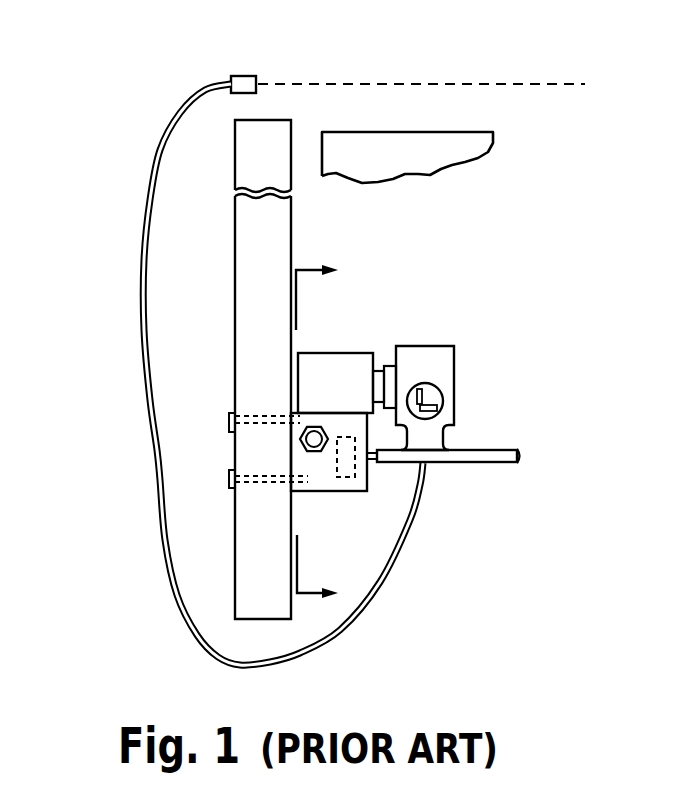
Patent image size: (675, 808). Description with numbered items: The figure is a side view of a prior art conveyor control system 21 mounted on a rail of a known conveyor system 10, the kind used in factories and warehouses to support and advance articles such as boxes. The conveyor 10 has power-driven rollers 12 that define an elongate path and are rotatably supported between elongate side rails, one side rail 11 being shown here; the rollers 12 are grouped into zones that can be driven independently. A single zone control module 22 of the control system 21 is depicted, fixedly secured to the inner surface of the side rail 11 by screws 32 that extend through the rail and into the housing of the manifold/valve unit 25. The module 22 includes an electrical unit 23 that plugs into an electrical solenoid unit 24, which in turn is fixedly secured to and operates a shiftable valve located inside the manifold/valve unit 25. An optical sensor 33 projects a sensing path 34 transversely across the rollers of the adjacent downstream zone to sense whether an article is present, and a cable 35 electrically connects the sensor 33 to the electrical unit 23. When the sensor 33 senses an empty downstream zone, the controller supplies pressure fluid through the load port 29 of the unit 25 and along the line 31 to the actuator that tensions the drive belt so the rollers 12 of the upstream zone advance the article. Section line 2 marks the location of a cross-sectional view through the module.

The section line 2- 2 is at (317, 434).
The conveyor system 10 is at (508, 121).
The side rail 11 is at (272, 241).
The rollers 12 is at (410, 133).
The conveyor control system 21 is at (456, 313).
The zone control module 22 is at (463, 342).
The electrical unit 23 is at (408, 355).
The electrical solenoid unit 24 is at (343, 353).
The manifold/valve unit 25 is at (343, 488).
The load port 29 is at (381, 462).
The line 31 is at (495, 456).
The screws 32 is at (229, 420).
The optical sensor 33 is at (250, 76).
The sensing path 34 is at (366, 82).
The cable 35 is at (152, 200).